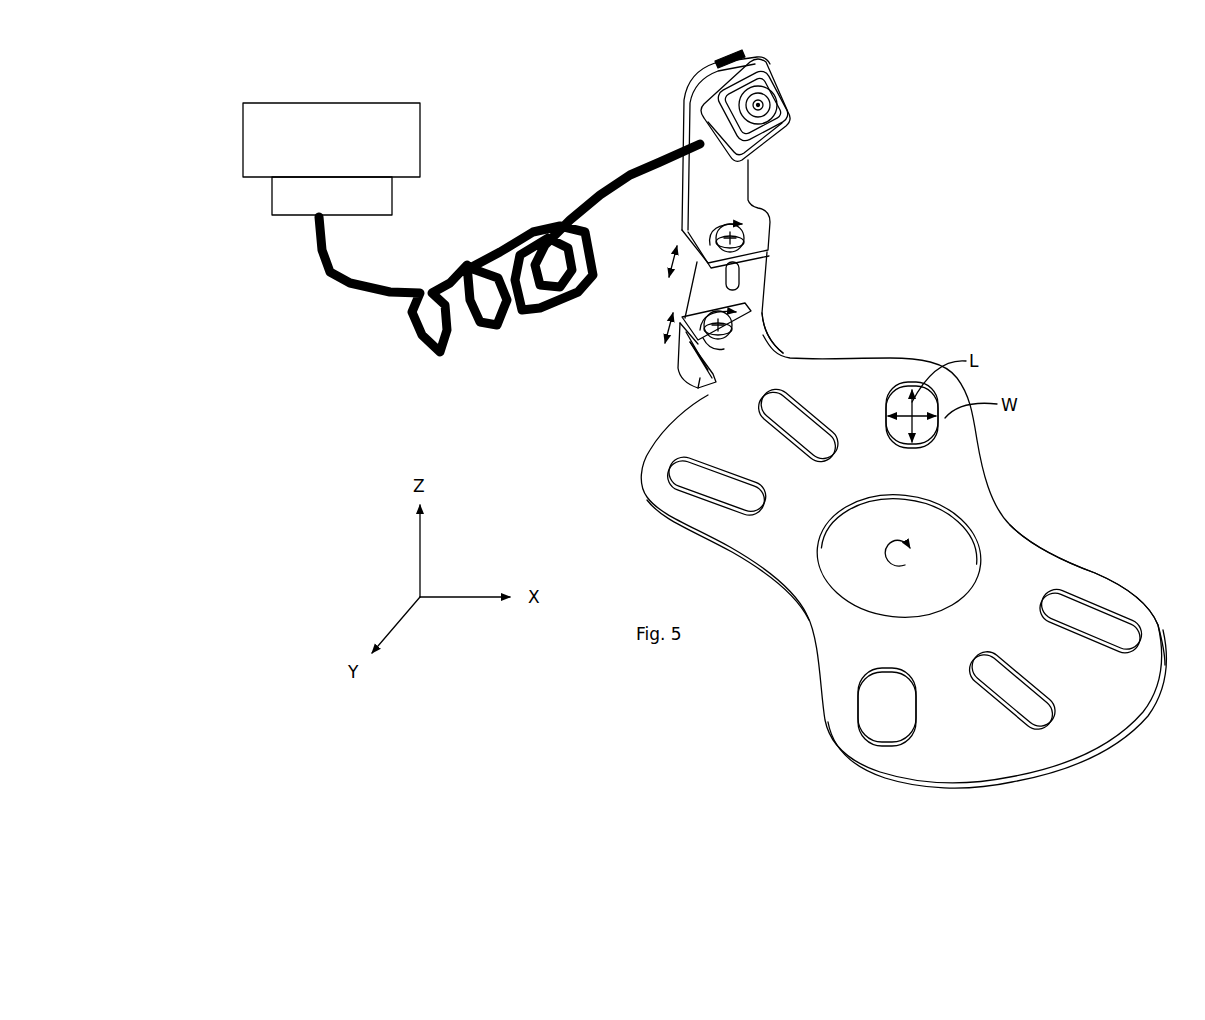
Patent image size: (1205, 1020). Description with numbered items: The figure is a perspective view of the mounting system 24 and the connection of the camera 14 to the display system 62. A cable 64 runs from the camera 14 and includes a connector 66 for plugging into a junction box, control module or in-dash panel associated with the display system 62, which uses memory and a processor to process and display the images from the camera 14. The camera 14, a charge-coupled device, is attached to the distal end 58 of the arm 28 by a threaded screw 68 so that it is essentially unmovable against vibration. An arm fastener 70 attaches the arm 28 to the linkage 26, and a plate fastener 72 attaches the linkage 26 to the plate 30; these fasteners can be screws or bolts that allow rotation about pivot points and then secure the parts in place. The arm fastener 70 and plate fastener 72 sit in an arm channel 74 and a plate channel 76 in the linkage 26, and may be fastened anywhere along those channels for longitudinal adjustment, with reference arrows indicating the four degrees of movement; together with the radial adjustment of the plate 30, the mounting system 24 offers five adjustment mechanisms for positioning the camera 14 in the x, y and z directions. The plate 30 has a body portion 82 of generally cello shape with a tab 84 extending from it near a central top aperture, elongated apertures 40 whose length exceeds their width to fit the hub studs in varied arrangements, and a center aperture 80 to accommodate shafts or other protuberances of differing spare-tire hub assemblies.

The camera 14 is at (782, 108).
The mounting system 24 is at (1141, 138).
The linkage 26 is at (766, 298).
The arm 28 is at (757, 196).
The plate 30 is at (903, 550).
The apertures 40 is at (855, 722).
The distal end 58 is at (690, 84).
The display system 62 is at (240, 135).
The cable 64 is at (368, 284).
The connector 66 is at (271, 196).
The threaded screw 68 is at (724, 56).
The arm fastener 70 is at (742, 233).
The plate fastener 72 is at (732, 324).
The arm channel 74 is at (730, 277).
The plate channel 76 is at (702, 378).
The center aperture 80 is at (966, 518).
The body portion 82 is at (1063, 558).
The tab 84 is at (767, 345).